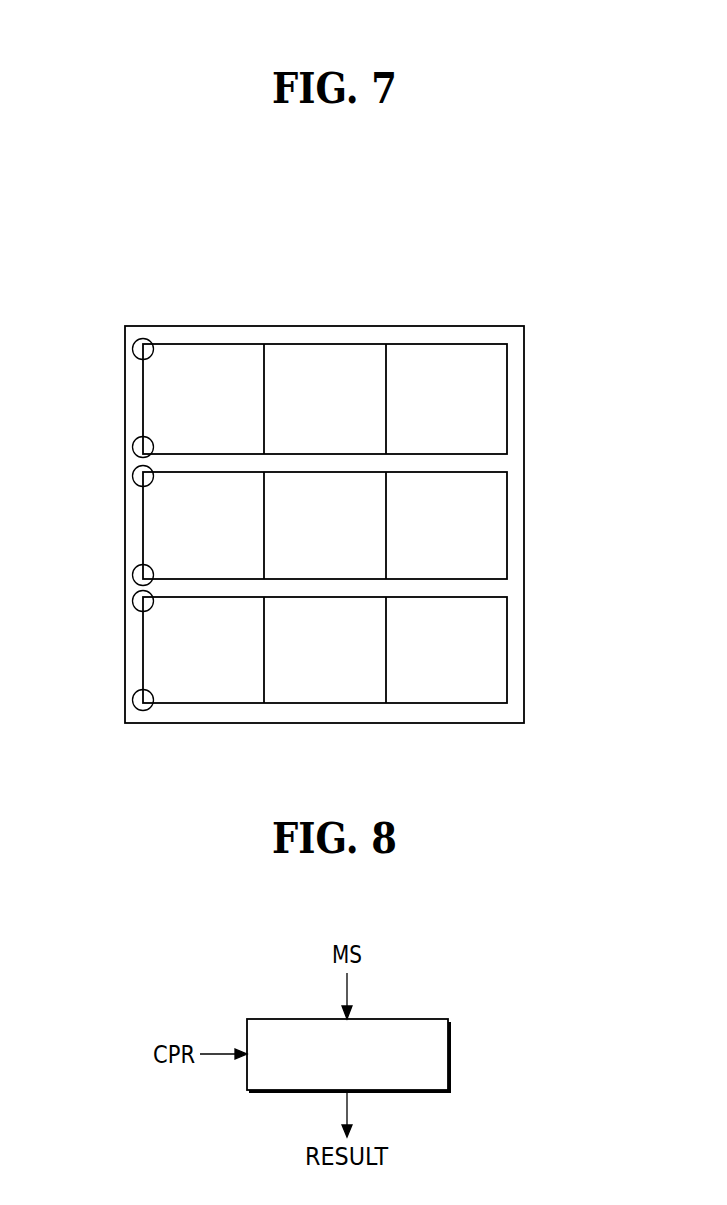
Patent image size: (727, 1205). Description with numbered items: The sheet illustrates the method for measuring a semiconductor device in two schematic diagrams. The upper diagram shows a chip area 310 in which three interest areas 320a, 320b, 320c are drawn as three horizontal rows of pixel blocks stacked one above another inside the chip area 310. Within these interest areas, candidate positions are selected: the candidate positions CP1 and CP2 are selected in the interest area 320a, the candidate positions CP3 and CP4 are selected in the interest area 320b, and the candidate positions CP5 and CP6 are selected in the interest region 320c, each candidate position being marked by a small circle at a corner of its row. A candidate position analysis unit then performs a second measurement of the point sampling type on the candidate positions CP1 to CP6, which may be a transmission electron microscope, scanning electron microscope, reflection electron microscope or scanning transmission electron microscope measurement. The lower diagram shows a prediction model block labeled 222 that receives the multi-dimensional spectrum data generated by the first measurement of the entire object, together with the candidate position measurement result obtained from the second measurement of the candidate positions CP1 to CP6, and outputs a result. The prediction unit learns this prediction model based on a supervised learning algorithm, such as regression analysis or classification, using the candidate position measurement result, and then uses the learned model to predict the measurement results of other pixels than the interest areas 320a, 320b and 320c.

In FIG. 7, the chip area 310 is at (338, 217).
In FIG. 7, the interest area 320a is at (507, 398).
In FIG. 7, the interest area 320b is at (507, 525).
In FIG. 7, the interest region 320c is at (507, 652).
In FIG. 7, the candidate position CP1 is at (132, 349).
In FIG. 7, the candidate position CP2 is at (132, 448).
In FIG. 7, the candidate position CP3 is at (132, 475).
In FIG. 7, the candidate position CP4 is at (132, 575).
In FIG. 7, the candidate position CP5 is at (132, 601).
In FIG. 7, the candidate position CP6 is at (132, 700).
In FIG. 8, the prediction model 222 is at (446, 1019).